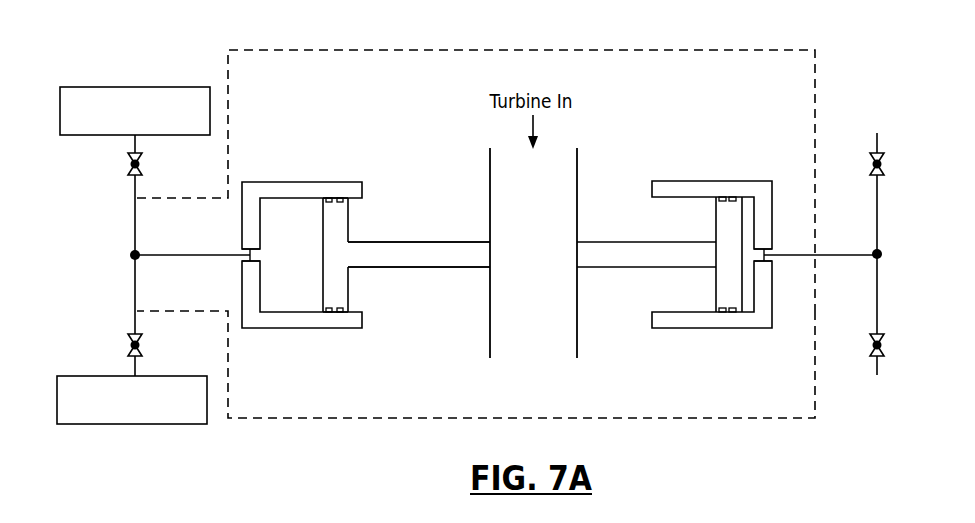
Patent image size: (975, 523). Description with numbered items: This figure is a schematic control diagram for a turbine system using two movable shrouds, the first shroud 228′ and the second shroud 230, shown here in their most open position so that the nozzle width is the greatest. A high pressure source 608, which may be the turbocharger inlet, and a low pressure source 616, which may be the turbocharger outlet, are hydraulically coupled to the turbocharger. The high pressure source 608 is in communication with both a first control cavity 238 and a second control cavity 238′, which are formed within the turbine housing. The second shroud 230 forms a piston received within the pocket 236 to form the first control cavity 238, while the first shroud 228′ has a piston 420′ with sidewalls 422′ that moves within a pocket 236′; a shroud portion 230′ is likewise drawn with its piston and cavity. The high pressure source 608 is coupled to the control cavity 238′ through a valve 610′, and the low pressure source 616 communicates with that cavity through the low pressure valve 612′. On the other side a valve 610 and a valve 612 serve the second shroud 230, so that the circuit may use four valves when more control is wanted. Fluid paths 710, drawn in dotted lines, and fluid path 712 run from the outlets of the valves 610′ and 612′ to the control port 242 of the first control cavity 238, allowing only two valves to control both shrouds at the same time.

The high pressure source 608 is at (170, 86).
The low pressure source 616 is at (163, 376).
The valve 610′ is at (132, 164).
The valve 612′ is at (132, 346).
The valve 610 is at (873, 164).
The valve 612 is at (873, 345).
The fluid path 710 is at (540, 50).
The fluid path 712 is at (745, 418).
The pocket 236′ is at (357, 302).
The sidewalls 422′ is at (337, 210).
The piston 420′ is at (350, 218).
The second control cavity 238′ is at (309, 262).
The movable shroud 230′ is at (448, 240).
The first shroud 228′ is at (422, 270).
The movable shroud 230 is at (613, 268).
The pocket 236 is at (658, 181).
The control port 242 is at (767, 252).
The first control cavity 238 is at (738, 266).